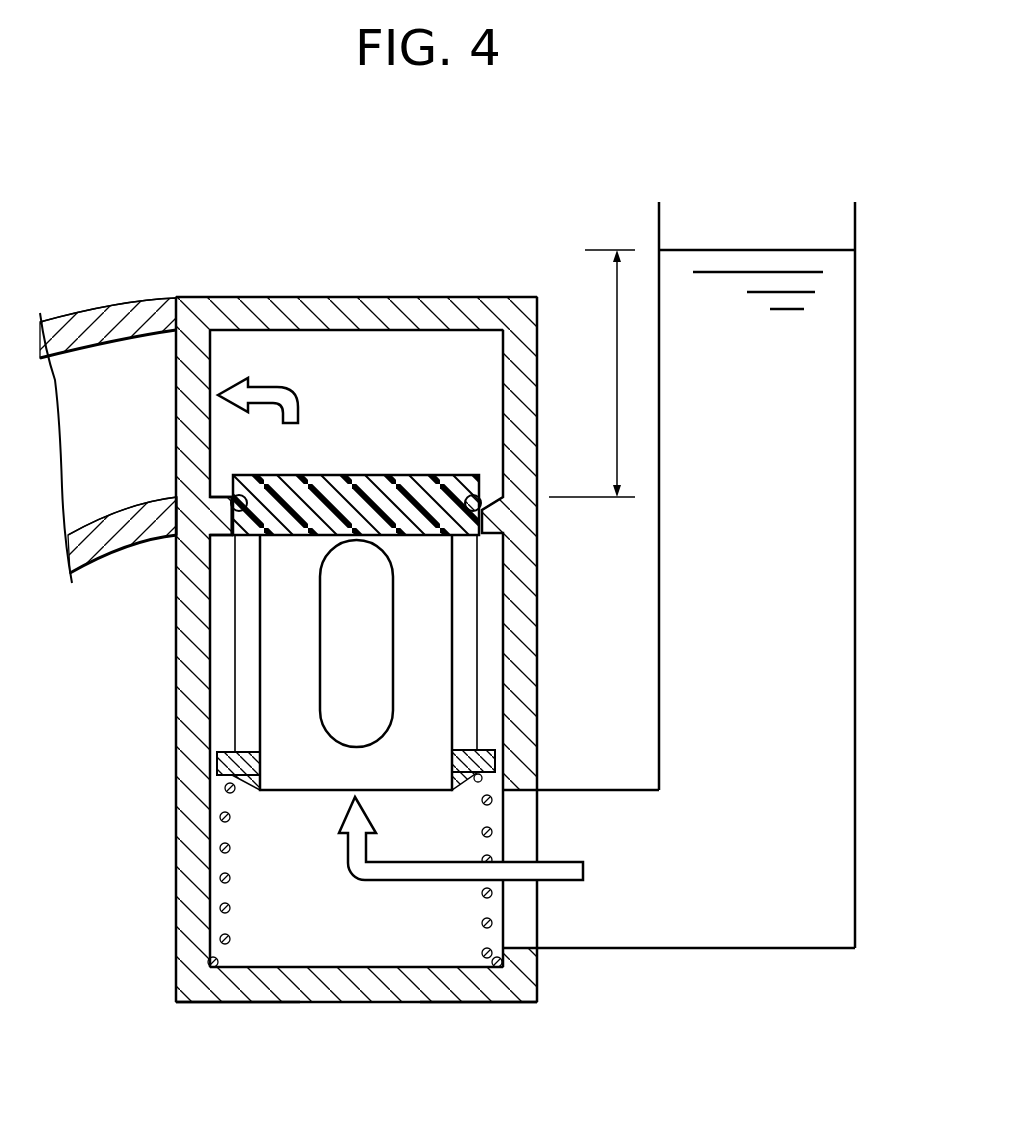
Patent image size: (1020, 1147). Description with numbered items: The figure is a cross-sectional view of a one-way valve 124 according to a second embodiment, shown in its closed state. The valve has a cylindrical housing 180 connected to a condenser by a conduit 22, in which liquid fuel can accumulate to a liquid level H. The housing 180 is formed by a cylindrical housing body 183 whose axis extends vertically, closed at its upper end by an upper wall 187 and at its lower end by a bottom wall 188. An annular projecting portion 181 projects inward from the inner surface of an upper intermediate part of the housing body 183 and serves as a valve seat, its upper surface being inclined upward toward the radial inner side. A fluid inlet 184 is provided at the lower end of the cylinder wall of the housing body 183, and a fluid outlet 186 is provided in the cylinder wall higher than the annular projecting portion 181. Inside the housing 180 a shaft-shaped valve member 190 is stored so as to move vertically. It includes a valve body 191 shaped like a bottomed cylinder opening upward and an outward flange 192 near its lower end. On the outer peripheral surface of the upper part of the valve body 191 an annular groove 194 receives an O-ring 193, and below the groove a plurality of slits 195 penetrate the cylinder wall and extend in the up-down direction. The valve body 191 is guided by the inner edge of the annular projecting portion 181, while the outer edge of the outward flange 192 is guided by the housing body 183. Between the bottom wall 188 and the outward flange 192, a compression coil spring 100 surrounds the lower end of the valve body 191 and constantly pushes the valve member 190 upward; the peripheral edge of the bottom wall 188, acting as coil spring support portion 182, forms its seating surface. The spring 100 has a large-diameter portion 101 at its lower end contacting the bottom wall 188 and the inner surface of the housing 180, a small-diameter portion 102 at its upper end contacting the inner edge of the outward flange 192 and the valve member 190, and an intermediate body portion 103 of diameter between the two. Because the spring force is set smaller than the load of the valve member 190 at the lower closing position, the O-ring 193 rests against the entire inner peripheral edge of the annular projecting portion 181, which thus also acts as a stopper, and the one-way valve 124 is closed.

The conduit 22 is at (70, 318).
The one-way valve 124 is at (429, 616).
The housing 180 is at (435, 295).
The upper wall 187 is at (333, 297).
The housing body 183 is at (185, 663).
The bottom wall 188 is at (390, 1003).
The coil spring support portion 182 is at (262, 1003).
The fluid inlet 184 is at (522, 945).
The fluid outlet 186 is at (205, 497).
The annular projecting portion 181 is at (218, 493).
The valve member 190 is at (352, 465).
The annular groove 194 is at (240, 492).
The O-ring 193 is at (486, 492).
The slits 195 is at (325, 660).
The outward flange 192 is at (220, 770).
The valve body 191 is at (250, 792).
The compression coil spring 100 is at (252, 887).
The small-diameter portion 102 is at (226, 791).
The body portion 103 is at (212, 908).
The large-diameter portion 101 is at (208, 960).
The water head height H is at (597, 373).